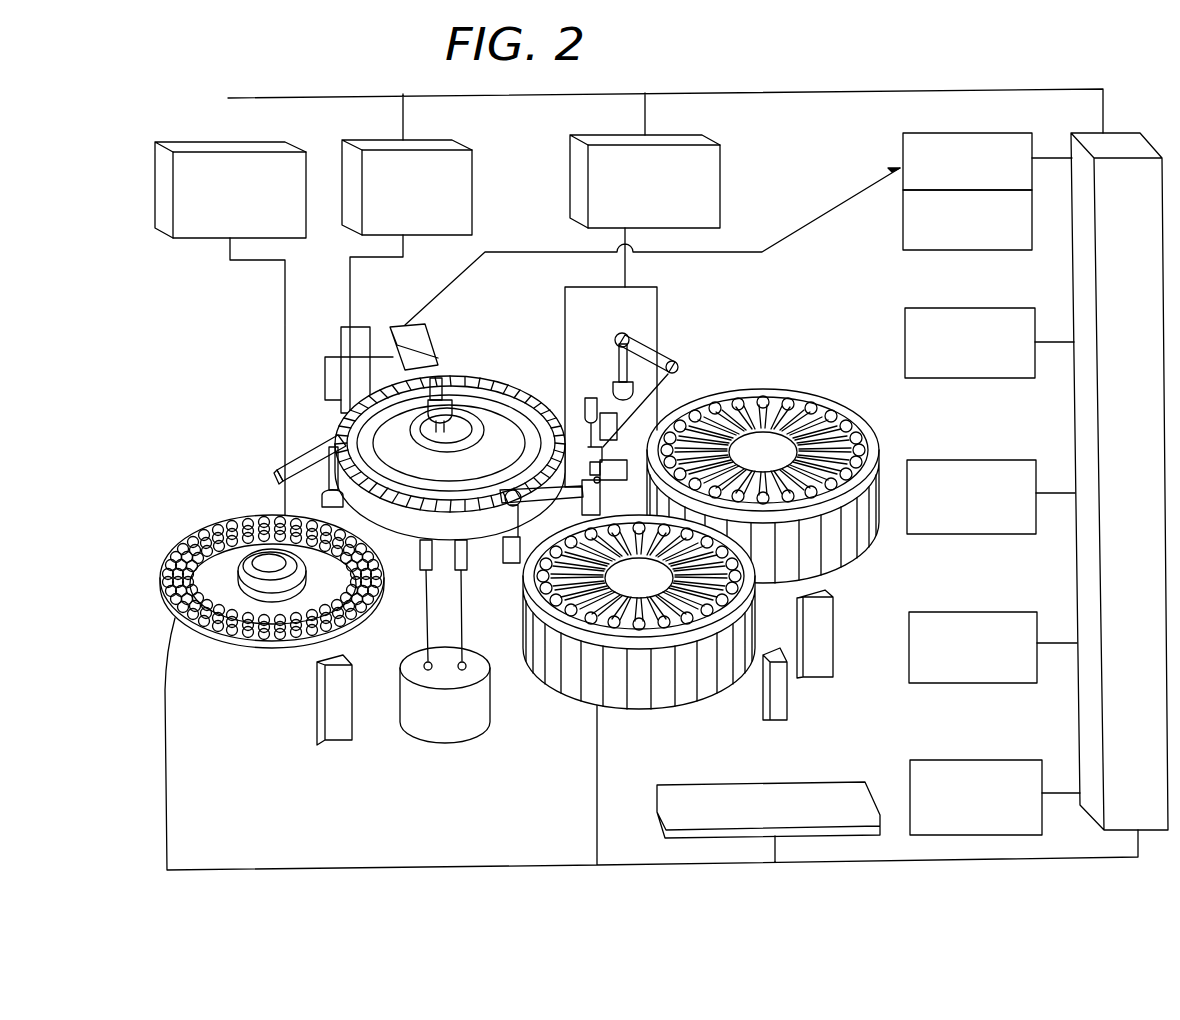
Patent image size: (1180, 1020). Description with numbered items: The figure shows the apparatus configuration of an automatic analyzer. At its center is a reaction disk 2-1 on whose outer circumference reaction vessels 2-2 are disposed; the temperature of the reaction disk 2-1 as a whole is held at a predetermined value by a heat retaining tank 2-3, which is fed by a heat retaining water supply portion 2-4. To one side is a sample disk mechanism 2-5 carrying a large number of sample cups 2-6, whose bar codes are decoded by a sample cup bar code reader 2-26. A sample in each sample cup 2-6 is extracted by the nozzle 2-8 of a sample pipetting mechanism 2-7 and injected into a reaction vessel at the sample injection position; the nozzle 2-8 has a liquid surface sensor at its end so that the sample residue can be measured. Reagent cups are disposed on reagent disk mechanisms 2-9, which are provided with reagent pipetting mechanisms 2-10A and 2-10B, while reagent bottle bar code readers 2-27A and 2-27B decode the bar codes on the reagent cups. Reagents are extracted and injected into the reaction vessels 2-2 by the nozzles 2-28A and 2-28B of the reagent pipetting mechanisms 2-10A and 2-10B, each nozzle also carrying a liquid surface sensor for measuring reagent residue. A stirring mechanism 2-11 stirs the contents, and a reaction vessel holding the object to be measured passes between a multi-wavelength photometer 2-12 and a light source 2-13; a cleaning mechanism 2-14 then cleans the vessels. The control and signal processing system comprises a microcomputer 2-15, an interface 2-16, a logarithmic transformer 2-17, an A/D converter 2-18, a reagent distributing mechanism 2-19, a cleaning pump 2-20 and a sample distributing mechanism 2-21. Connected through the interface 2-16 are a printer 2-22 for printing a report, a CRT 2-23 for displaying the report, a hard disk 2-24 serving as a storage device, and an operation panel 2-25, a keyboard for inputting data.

The reaction disk 2-1 is at (543, 405).
The reaction vessels 2-2 is at (505, 385).
The heat retaining tank 2-3 is at (418, 548).
The heat retaining water supply portion 2-4 is at (445, 742).
The sample disk mechanism 2-5 is at (266, 650).
The sample cups 2-6 is at (200, 530).
The sample pipetting mechanism 2-7 is at (302, 452).
The nozzle 2-8 is at (270, 490).
The reagent disk mechanisms 2-9 is at (730, 688).
The reagent pipetting mechanism 2-10A is at (506, 565).
The reagent pipetting mechanism 2-10B is at (672, 362).
The stirring mechanism 2-11 is at (585, 400).
The multi-wavelength photometer 2-12 is at (397, 327).
The light source 2-13 is at (433, 412).
The cleaning mechanism 2-14 is at (340, 340).
The microcomputer 2-15 is at (905, 328).
The interface 2-16 is at (1071, 280).
The logarithmic transformer 2-17 is at (965, 133).
The A/D converter 2-18 is at (903, 243).
The reagent distributing mechanism 2-19 is at (722, 148).
The cleaning pump 2-20 is at (475, 152).
The sample distributing mechanism 2-21 is at (155, 178).
The printer 2-22 is at (957, 460).
The CRT 2-23 is at (962, 612).
The hard disk 2-24 is at (966, 760).
The operation panel 2-25 is at (697, 782).
The sample cup bar code reader 2-26 is at (335, 745).
The reagent bottle bar code reader 2-27A is at (774, 720).
The reagent bottle bar code reader 2-27B is at (818, 678).
The nozzle 2-28A is at (590, 510).
The nozzle 2-28B is at (680, 372).